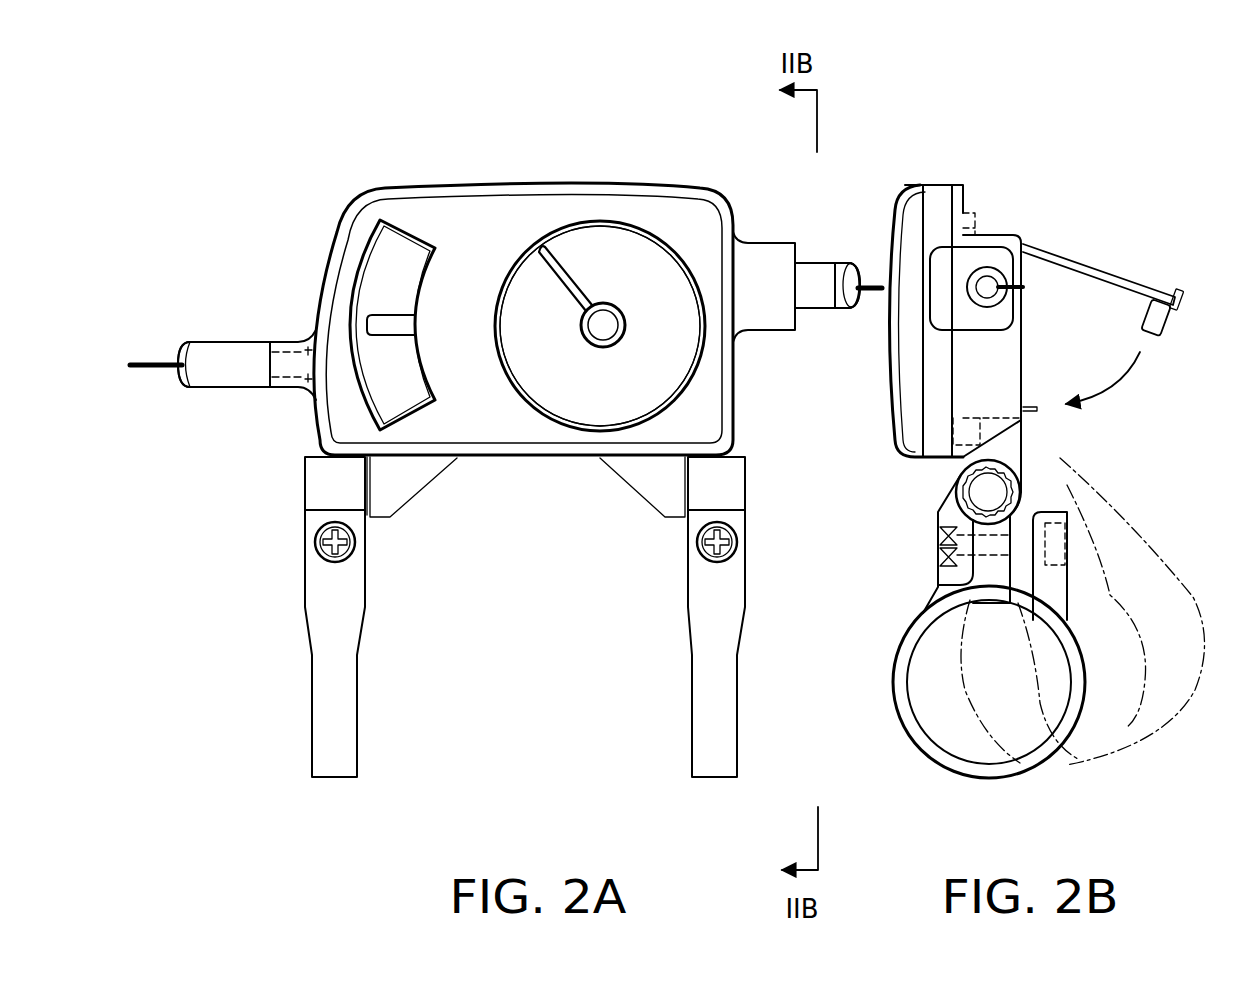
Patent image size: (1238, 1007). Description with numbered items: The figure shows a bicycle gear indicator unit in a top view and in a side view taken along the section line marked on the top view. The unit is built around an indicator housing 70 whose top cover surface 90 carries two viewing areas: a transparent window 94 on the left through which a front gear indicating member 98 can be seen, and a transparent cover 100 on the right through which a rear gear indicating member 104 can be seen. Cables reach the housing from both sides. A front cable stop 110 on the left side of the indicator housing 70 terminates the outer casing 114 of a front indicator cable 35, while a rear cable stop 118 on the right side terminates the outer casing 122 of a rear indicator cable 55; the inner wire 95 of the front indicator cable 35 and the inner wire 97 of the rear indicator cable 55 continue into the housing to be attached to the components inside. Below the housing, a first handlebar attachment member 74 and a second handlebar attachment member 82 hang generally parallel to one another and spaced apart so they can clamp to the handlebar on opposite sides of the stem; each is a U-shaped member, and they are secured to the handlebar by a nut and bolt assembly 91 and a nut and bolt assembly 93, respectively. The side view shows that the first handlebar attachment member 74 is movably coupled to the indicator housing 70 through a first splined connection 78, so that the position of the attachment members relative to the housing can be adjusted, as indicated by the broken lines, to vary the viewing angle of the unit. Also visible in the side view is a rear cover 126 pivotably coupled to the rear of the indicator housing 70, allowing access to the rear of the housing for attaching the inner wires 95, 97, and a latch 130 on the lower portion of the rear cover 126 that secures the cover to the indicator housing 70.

In FIG. 2A, the front indicator cable 35 is at (188, 328).
In FIG. 2A, the rear indicator cable 55 is at (836, 250).
In FIG. 2A, the indicator housing 70 is at (417, 187).
In FIG. 2B, the indicator housing 70 is at (964, 338).
In FIG. 2A, the first handlebar attachment member 74 is at (688, 592).
In FIG. 2B, the first handlebar attachment member 74 is at (923, 610).
In FIG. 2B, the first splined connection 78 is at (960, 481).
In FIG. 2A, the second handlebar attachment member 82 is at (315, 600).
In FIG. 2A, the top cover surface 90 is at (521, 212).
In FIG. 2A, the nut and bolt assembly 91 is at (705, 541).
In FIG. 2A, the nut and bolt assembly 93 is at (318, 540).
In FIG. 2A, the transparent window 94 is at (405, 290).
In FIG. 2A, the inner wire 95 is at (152, 362).
In FIG. 2A, the inner wire 97 is at (870, 283).
In FIG. 2B, the inner wire 97 is at (995, 287).
In FIG. 2A, the front gear indicating member 98 is at (392, 333).
In FIG. 2A, the transparent cover 100 is at (532, 368).
In FIG. 2A, the rear gear indicating member 104 is at (555, 240).
In FIG. 2A, the front cable stop 110 is at (294, 342).
In FIG. 2A, the outer casing 114 is at (222, 360).
In FIG. 2A, the rear cable stop 118 is at (808, 262).
In FIG. 2A, the outer casing 122 is at (844, 300).
In FIG. 2B, the rear cover 126 is at (1063, 258).
In FIG. 2B, the latch 130 is at (1160, 323).